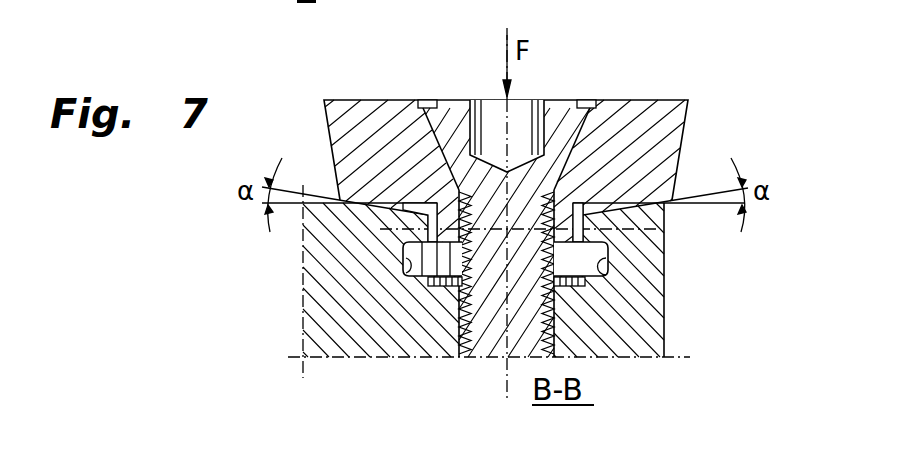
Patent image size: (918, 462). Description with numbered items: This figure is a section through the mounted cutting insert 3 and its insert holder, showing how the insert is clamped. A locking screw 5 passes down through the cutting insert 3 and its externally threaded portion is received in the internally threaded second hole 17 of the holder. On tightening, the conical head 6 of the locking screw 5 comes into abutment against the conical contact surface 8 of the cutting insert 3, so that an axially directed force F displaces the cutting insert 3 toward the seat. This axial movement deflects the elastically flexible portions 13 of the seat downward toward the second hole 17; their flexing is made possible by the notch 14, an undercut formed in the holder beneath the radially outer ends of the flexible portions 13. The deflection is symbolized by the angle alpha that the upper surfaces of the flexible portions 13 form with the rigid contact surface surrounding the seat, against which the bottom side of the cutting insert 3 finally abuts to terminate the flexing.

The cutting insert 3 is at (298, 141).
The locking screw 5 is at (482, 74).
The conical head 6 is at (565, 143).
The conical contact surface 8 is at (580, 104).
The flexible portions 13 is at (412, 228).
The notch 14 is at (403, 262).
The second hole 17 is at (470, 328).